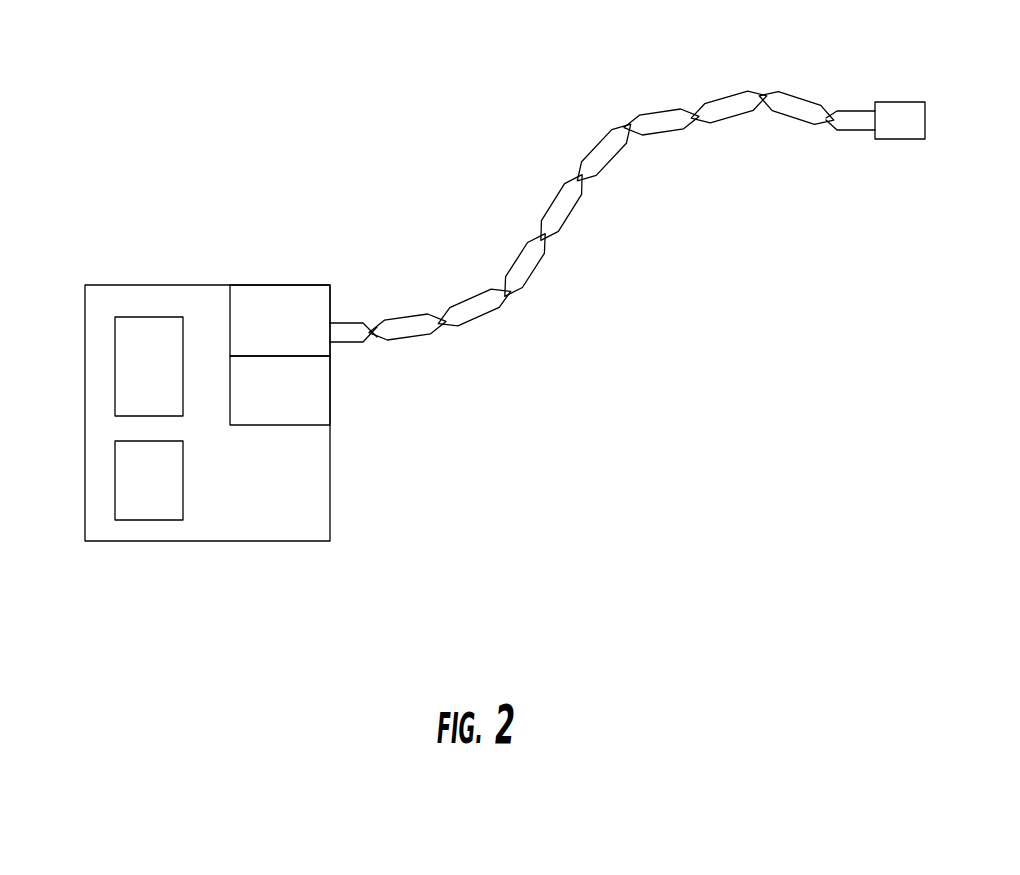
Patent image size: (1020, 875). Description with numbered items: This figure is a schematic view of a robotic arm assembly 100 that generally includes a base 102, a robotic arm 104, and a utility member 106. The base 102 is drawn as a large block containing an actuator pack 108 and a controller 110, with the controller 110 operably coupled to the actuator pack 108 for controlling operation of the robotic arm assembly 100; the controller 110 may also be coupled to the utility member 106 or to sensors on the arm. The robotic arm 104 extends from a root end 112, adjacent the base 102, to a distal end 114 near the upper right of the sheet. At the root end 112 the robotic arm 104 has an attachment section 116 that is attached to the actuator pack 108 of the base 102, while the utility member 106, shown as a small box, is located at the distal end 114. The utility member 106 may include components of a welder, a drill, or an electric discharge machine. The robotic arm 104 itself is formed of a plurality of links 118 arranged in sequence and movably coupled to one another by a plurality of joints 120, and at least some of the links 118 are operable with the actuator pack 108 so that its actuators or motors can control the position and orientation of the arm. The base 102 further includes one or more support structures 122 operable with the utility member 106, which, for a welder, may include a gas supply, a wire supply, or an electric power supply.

The robotic arm assembly 100 is at (310, 118).
The base 102 is at (168, 285).
The robotic arm 104 is at (622, 275).
The utility member 106 is at (902, 140).
The actuator pack 108 is at (283, 405).
The controller 110 is at (140, 388).
The root end 112 is at (373, 373).
The distal end 114 is at (842, 172).
The attachment section 116 is at (283, 298).
The links 118 is at (531, 282).
The joints 120 is at (510, 298).
The support structures 122 is at (140, 487).